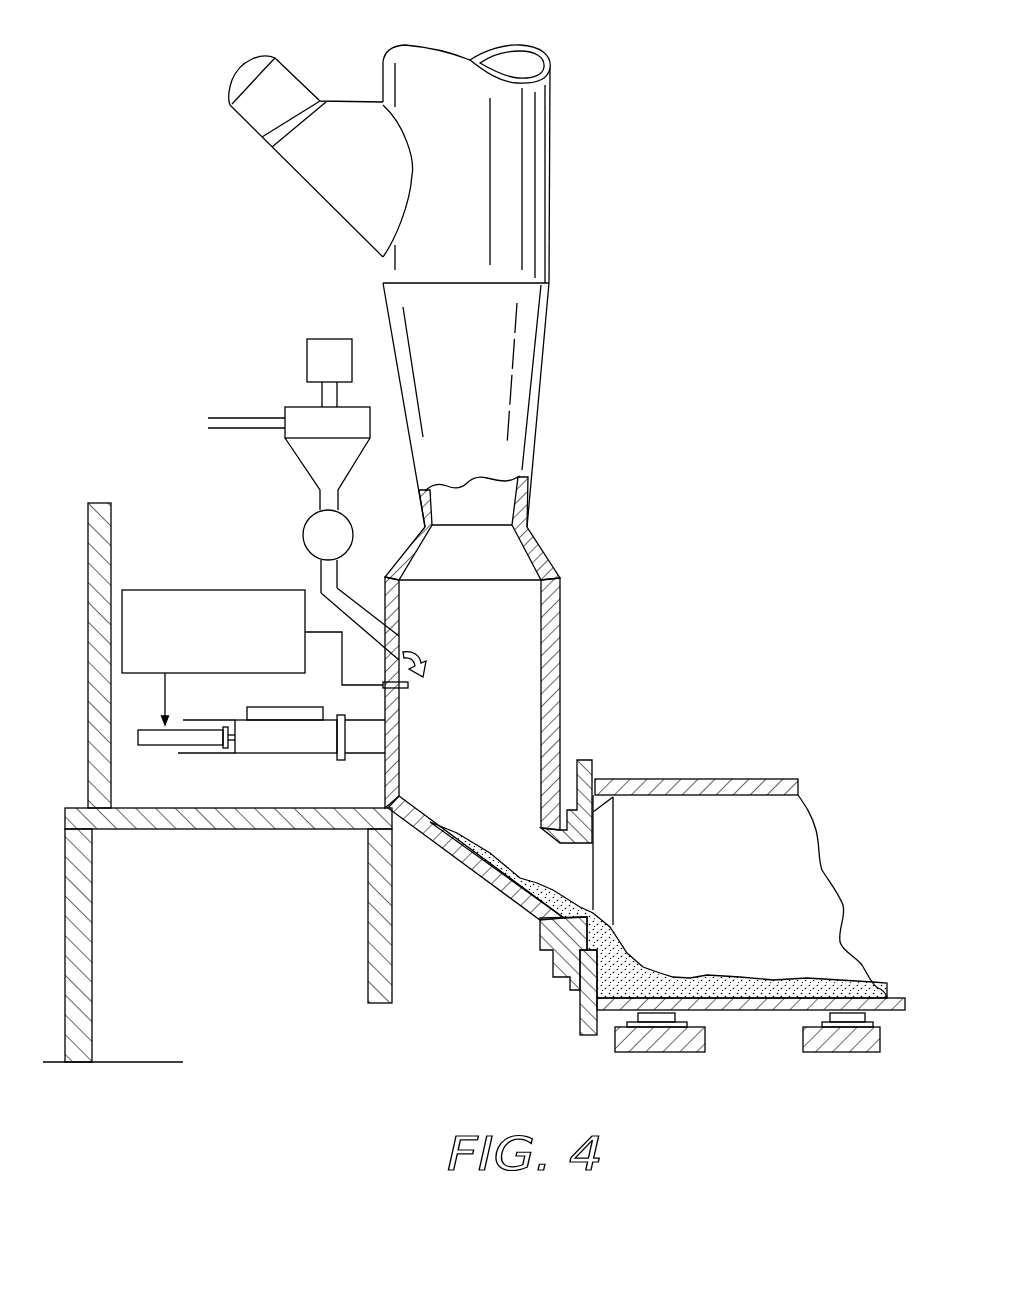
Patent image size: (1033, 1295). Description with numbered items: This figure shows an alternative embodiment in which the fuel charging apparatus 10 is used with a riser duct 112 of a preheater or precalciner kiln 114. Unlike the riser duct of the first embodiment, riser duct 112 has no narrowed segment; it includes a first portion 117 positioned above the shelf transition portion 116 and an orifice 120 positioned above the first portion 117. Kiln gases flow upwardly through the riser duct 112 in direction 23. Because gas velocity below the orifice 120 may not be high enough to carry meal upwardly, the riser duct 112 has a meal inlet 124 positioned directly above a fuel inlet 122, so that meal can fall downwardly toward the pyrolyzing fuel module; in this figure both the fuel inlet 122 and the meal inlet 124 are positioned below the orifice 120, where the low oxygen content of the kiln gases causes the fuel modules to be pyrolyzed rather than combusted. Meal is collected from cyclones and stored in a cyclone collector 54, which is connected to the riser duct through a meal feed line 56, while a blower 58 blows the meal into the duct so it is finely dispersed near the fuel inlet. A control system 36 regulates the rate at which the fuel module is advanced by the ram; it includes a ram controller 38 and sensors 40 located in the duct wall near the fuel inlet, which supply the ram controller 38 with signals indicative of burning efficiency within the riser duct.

The fuel charging apparatus 10 is at (284, 774).
The kiln gas flow direction 23 is at (556, 850).
The control system 36 is at (257, 570).
The ram controller 38 is at (172, 588).
The sensors 40 is at (408, 696).
The cyclone collector 54 is at (308, 453).
The meal feed line 56 is at (355, 612).
The blower 58 is at (343, 533).
The riser duct 112 is at (568, 673).
The preheater or precalciner kiln 114 is at (733, 605).
The shelf transition portion 116 is at (477, 865).
The first portion 117 is at (569, 708).
The orifice 120 is at (531, 523).
The fuel inlet 122 is at (402, 740).
The meal inlet 124 is at (400, 644).